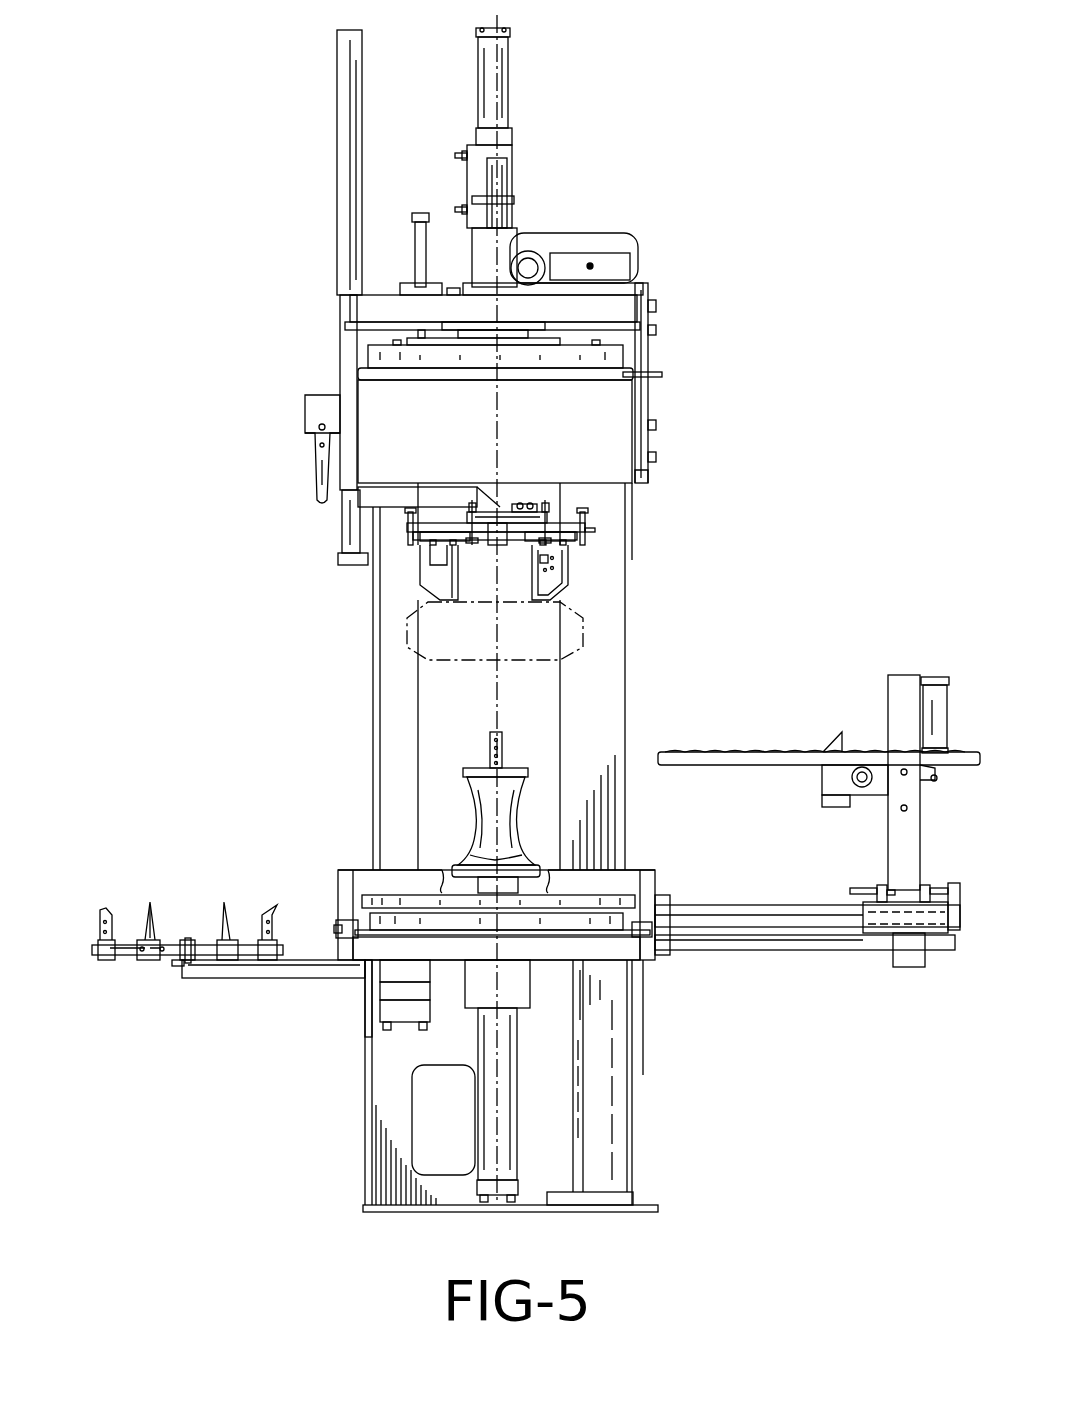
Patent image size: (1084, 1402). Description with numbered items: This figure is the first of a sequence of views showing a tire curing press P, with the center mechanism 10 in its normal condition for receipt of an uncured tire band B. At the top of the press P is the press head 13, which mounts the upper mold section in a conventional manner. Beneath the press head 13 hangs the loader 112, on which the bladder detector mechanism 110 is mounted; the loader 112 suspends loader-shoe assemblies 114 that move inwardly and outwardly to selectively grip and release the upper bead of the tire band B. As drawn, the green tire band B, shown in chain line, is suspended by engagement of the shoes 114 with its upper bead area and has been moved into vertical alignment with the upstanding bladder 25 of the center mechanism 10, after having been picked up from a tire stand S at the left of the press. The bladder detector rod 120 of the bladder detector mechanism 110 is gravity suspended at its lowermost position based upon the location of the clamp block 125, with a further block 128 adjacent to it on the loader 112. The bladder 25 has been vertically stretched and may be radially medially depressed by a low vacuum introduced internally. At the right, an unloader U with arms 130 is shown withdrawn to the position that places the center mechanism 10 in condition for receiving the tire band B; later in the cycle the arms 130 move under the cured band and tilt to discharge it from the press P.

The press P is at (660, 350).
The press head 13 is at (610, 405).
The bladder detector mechanism 110 is at (528, 498).
The loader 112 is at (592, 537).
The loader-shoe assemblies 114 is at (442, 577).
The bladder detector rod 120 is at (507, 597).
The clamp block 125 is at (495, 510).
The right mounting bolt 128 is at (515, 510).
The tire band B is at (583, 640).
The center mechanism 10 is at (420, 807).
The bladder 25 is at (463, 817).
The arms 130 is at (768, 760).
The unloader U is at (803, 897).
The tire stand S is at (137, 970).